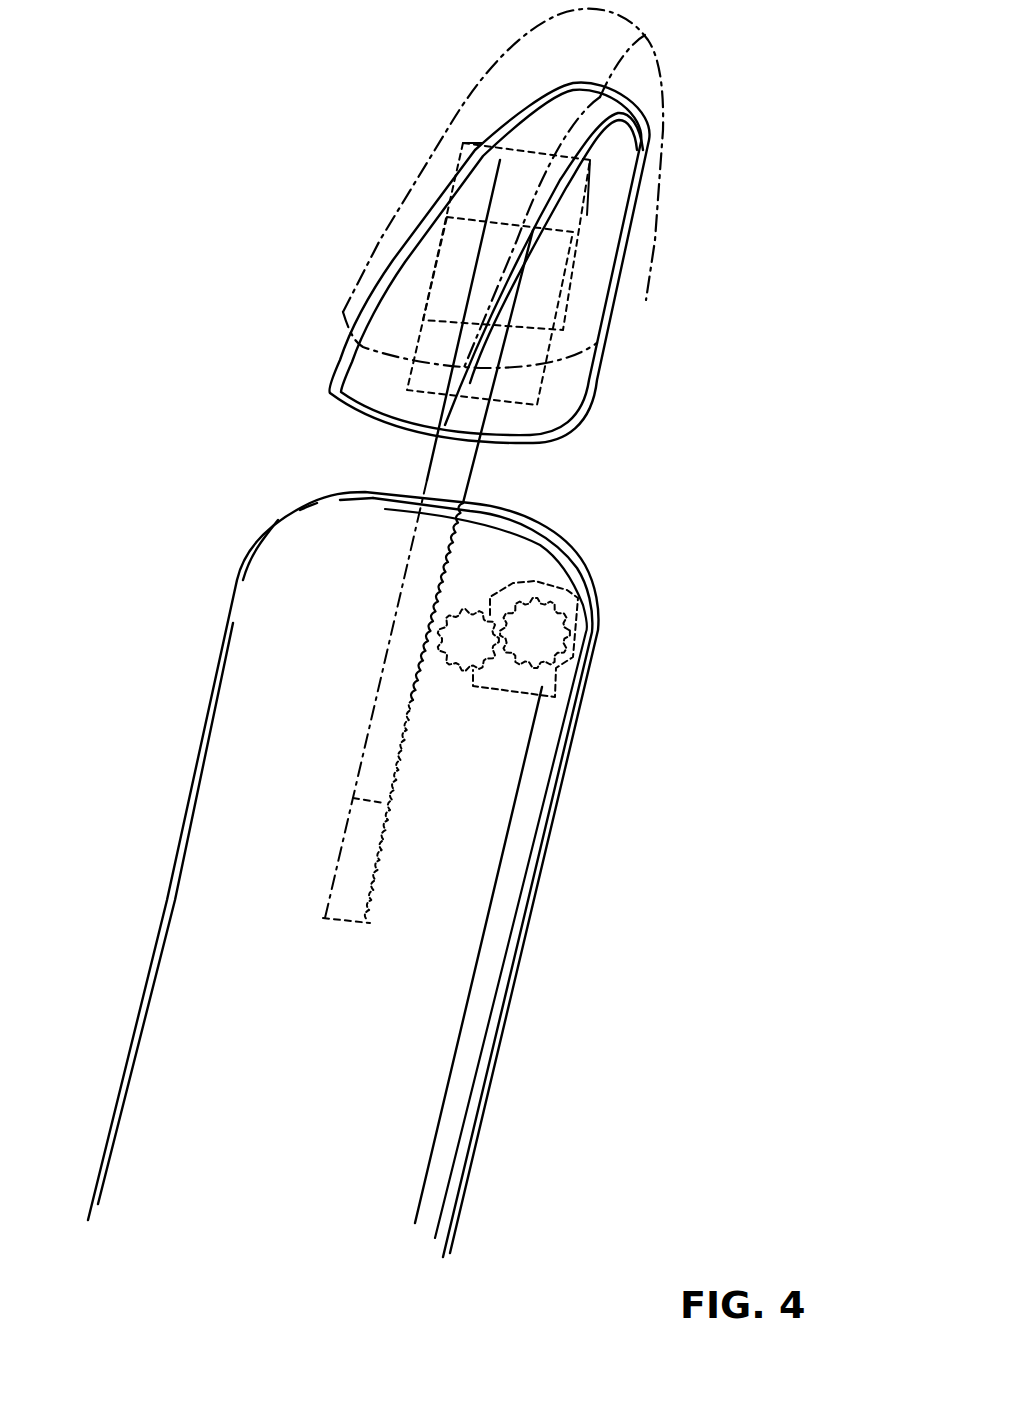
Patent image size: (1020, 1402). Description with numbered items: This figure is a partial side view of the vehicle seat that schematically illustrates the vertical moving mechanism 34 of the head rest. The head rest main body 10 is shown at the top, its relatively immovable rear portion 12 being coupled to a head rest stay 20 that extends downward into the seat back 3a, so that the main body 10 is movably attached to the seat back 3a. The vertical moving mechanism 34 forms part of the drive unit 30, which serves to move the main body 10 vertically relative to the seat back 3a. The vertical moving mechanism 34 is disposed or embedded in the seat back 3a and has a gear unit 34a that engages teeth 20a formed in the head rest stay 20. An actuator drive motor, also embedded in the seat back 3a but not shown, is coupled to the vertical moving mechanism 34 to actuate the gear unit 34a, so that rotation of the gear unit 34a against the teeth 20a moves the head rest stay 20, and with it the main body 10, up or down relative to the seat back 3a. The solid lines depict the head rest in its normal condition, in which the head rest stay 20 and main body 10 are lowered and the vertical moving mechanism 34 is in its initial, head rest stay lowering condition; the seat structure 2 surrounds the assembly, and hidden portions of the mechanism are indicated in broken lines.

The seat back 2 is at (190, 785).
The seat back 3a is at (505, 862).
The main body 10 is at (634, 237).
The rear portion 12 is at (558, 417).
The head rest stays 20 is at (455, 466).
The teeth 20a is at (455, 556).
The drive unit 30 is at (789, 582).
The vertical moving mechanism 34 is at (572, 597).
The gear unit 34a is at (552, 633).